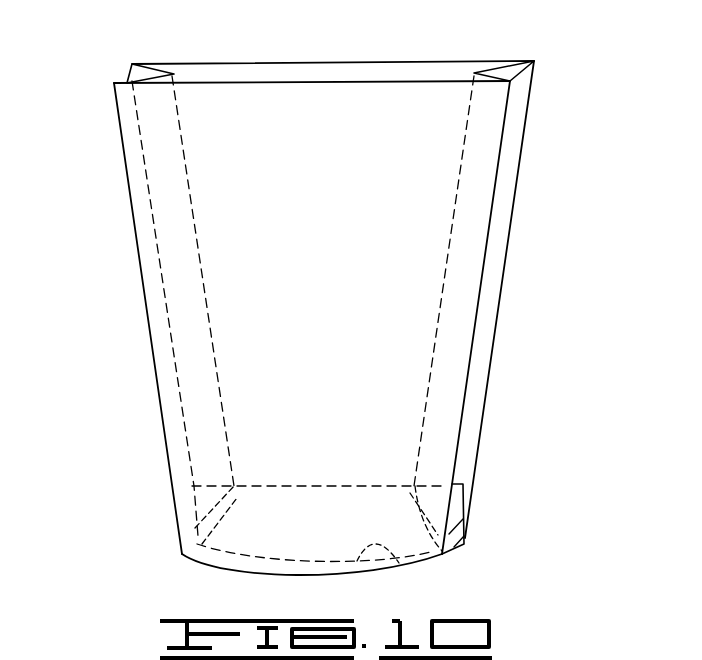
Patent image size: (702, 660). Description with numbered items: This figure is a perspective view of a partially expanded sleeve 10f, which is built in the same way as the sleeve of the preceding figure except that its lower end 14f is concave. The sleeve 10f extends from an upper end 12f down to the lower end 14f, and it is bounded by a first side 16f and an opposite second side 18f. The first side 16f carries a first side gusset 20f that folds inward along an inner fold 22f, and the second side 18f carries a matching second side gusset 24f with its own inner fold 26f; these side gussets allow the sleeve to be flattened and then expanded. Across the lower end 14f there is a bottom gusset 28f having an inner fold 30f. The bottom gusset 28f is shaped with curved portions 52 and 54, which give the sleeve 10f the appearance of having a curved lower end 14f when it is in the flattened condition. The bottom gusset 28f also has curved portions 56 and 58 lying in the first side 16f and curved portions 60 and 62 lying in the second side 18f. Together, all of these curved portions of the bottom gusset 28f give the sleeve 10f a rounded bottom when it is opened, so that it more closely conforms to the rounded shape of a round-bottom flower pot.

The sleeve 10f is at (551, 317).
The upper end 12f is at (222, 62).
The lower end 14f is at (203, 563).
The first side 16f is at (143, 297).
The second side 18f is at (507, 250).
The first side gusset 20f is at (130, 70).
The inner fold 22f is at (182, 162).
The second side gusset 24f is at (515, 100).
The inner fold 26f is at (457, 180).
The bottom gusset 28f is at (467, 498).
The inner fold 30f is at (383, 485).
The curved portion 52 is at (263, 573).
The curved portion 54 is at (397, 562).
The curved portion 56 is at (187, 507).
The curved portion 58 is at (190, 528).
The curved portion 60 is at (467, 513).
The curved portion 62 is at (465, 528).